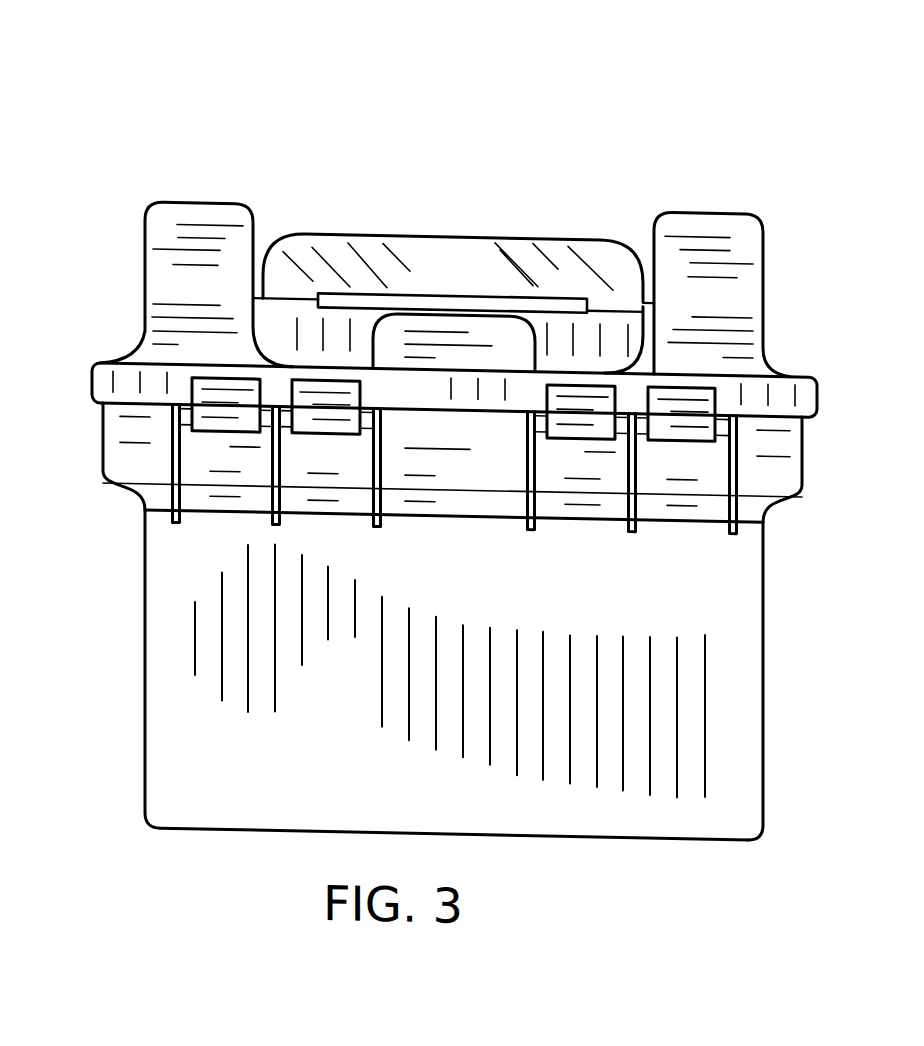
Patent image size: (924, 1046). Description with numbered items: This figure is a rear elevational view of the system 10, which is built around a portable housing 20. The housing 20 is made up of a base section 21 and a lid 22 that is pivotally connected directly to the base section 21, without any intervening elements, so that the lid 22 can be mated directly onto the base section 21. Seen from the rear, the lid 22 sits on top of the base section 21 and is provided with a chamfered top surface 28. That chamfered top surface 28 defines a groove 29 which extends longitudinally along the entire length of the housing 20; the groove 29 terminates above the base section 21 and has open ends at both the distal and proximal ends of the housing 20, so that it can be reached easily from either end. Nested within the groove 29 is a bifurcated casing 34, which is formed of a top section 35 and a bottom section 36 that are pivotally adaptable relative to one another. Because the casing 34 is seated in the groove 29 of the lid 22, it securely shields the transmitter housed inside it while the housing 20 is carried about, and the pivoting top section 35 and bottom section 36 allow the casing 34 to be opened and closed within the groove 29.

The system 10 is at (878, 122).
The portable housing 20 is at (702, 805).
The base section 21 is at (752, 739).
The lid 22 is at (802, 379).
The chamfered top surface 28 is at (257, 252).
The groove 29 is at (644, 250).
The bifurcated casing 34 is at (547, 244).
The top section 35 is at (402, 231).
The bottom section 36 is at (293, 313).